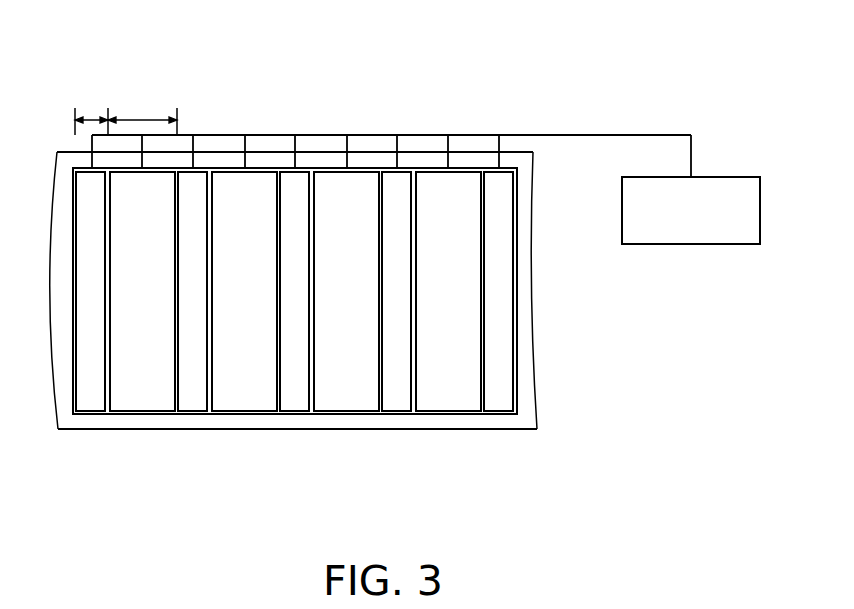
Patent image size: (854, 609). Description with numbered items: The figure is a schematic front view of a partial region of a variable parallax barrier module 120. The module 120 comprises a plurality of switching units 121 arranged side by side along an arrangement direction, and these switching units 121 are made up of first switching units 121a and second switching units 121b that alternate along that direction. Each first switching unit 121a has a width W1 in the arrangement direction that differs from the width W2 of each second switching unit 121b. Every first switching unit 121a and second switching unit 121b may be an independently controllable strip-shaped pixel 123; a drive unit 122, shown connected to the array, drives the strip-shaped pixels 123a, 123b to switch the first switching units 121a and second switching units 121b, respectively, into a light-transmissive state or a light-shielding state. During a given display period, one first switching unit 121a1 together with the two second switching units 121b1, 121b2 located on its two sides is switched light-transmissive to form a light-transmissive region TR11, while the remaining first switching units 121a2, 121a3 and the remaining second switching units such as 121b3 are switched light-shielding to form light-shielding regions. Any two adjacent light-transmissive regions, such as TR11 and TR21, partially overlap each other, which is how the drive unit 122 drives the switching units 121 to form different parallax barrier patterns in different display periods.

The variable parallax barrier module 120 is at (685, 497).
The switching units 121 is at (266, 252).
The first switching units 121a is at (265, 277).
The second switching units 121b is at (266, 277).
The first switching unit 121a1 is at (142, 403).
The first switching unit 121a2 is at (238, 400).
The first switching unit 121a3 is at (363, 398).
The second switching unit 121b1 is at (92, 403).
The second switching unit 121b2 is at (193, 400).
The second switching unit 121b3 is at (303, 398).
The drive unit 122 is at (690, 244).
The strip-shaped pixels 123 is at (455, 348).
The strip-shaped pixel 123a is at (427, 400).
The strip-shaped pixel 123b is at (402, 382).
The width of first switching unit W1 is at (142, 111).
The width of second switching unit W2 is at (92, 111).
The light-transmissive region TR11 is at (185, 483).
The light-transmissive region TR21 is at (312, 483).